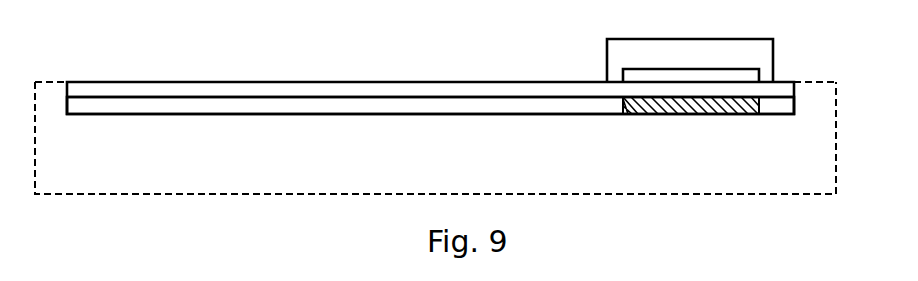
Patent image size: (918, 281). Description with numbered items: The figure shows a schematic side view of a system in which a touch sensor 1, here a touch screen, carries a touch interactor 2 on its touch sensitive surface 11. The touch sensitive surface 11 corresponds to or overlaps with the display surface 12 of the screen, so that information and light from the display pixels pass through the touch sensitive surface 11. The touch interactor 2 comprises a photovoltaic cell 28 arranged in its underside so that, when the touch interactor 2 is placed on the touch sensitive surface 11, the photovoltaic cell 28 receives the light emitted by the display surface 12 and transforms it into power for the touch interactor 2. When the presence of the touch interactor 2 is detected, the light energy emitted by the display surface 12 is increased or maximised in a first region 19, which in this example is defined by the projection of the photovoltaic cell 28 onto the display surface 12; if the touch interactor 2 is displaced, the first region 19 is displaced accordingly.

The touch sensor 1 is at (256, 166).
The touch sensitive surface 11 is at (469, 87).
The display surface 12 is at (283, 105).
The first region 19 is at (744, 110).
The touch interactor 2 is at (675, 64).
The photovoltaic cell 28 is at (726, 76).